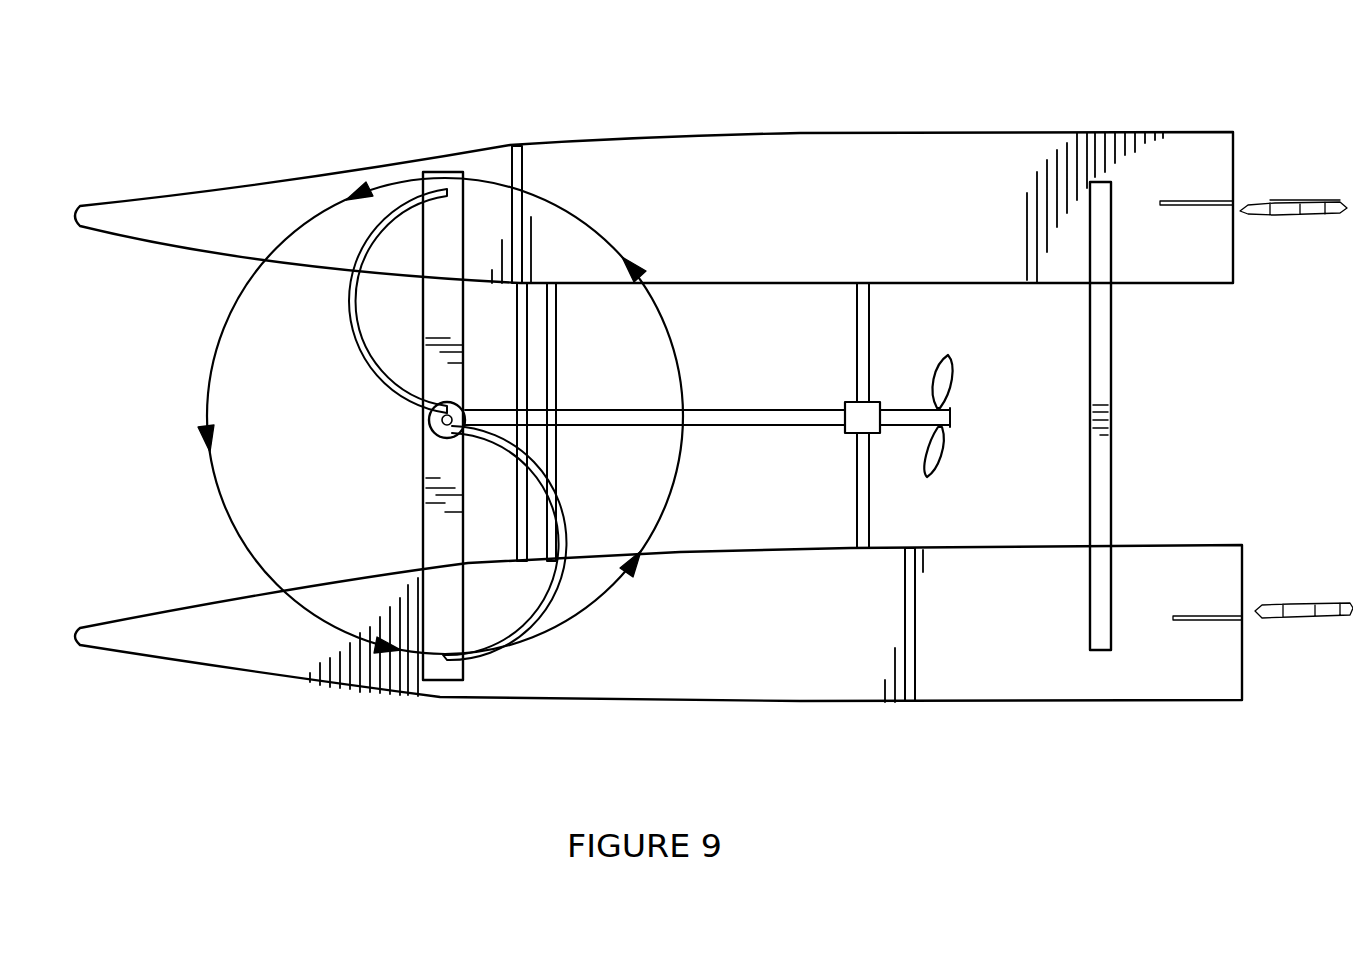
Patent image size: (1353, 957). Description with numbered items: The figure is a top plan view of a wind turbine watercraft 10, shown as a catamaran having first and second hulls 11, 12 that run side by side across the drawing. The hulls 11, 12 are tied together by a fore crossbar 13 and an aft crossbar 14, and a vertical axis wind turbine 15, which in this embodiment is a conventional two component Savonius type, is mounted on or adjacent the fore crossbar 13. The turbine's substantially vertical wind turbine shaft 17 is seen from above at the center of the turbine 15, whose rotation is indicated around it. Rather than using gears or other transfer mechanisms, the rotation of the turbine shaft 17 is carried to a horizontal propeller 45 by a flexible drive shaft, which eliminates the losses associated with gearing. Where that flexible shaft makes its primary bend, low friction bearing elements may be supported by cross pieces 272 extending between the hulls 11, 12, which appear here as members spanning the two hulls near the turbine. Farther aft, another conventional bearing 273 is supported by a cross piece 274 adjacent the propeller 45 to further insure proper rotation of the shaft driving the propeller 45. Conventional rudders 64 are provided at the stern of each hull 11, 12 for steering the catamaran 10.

The watercraft 10 is at (1110, 68).
The hull 11 is at (845, 682).
The hull 12 is at (733, 173).
The fore crossbar 13 is at (440, 457).
The aft crossbar 14 is at (1105, 343).
The vertical axis wind turbine 15 is at (362, 415).
The wind turbine shaft 17 is at (432, 416).
The horizontal propeller 45 is at (943, 370).
The rudders 64 is at (1267, 207).
The cross pieces 272 is at (533, 353).
The bearing 273 is at (863, 418).
The cross piece 274 is at (863, 340).